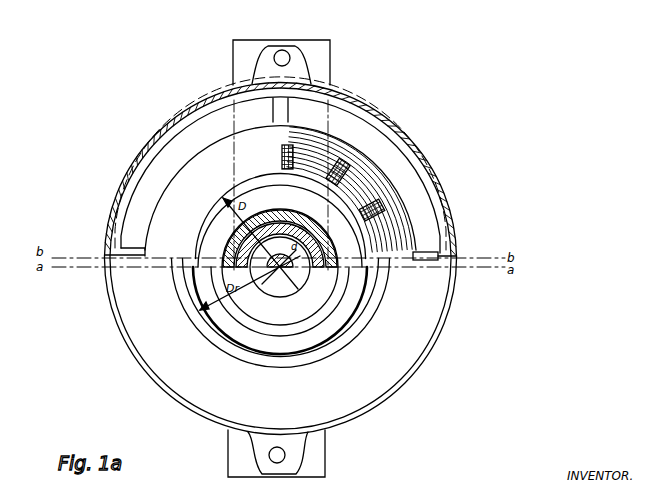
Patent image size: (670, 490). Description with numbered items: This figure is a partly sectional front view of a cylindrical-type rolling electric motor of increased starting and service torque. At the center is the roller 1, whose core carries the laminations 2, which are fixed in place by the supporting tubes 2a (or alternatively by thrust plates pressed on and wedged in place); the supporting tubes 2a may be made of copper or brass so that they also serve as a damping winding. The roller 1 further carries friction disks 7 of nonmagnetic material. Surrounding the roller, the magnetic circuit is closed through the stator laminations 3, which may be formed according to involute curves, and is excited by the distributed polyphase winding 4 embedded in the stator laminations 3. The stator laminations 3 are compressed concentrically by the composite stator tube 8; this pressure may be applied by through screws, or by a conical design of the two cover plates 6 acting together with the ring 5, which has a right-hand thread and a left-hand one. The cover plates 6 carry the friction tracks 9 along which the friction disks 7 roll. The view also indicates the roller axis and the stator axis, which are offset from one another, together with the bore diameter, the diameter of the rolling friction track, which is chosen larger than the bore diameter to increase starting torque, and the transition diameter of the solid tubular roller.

The roller 1 is at (229, 252).
The laminations 2 is at (240, 238).
The supporting tubes 2a is at (273, 210).
The stator laminations 3 is at (353, 150).
The distributed polyphase winding 4 is at (400, 197).
The ring 5 is at (350, 96).
The cover plates 6 is at (420, 318).
The friction disks 7 is at (303, 342).
The composite stator tube 8 is at (420, 217).
The friction tracks 9 is at (358, 328).